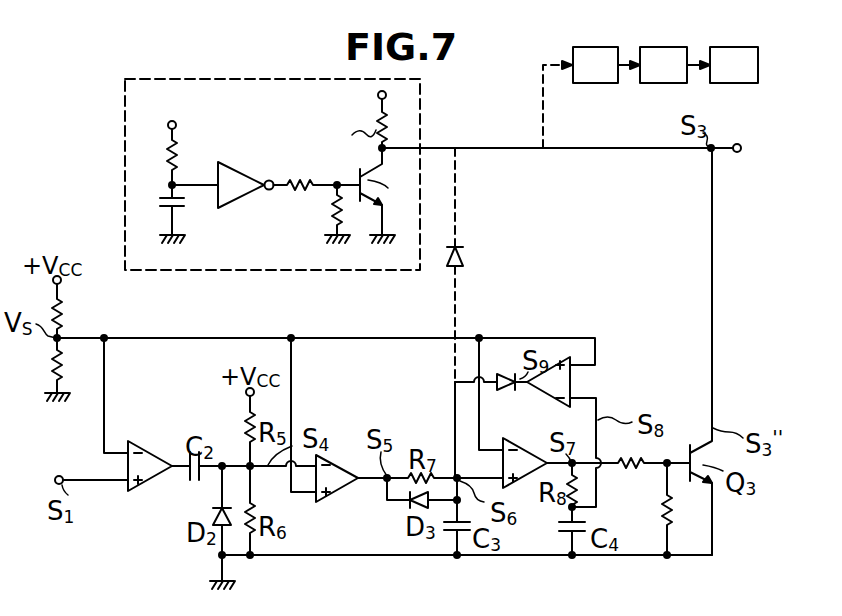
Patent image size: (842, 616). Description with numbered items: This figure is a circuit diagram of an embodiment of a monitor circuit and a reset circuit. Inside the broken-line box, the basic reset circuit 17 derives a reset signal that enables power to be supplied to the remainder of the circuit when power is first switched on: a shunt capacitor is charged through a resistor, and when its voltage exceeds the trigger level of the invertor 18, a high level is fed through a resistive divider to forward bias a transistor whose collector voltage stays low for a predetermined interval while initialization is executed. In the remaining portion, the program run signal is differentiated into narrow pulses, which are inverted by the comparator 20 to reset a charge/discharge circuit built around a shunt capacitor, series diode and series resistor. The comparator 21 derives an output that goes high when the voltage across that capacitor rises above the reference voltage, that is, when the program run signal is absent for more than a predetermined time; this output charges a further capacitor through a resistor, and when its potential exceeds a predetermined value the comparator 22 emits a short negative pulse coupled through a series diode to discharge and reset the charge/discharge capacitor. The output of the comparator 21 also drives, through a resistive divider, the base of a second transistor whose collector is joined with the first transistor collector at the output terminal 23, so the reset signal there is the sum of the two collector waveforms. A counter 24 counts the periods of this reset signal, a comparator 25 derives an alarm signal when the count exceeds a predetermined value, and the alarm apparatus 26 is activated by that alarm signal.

The basic reset circuit 17 is at (125, 148).
The invertor 18 is at (243, 203).
The comparator 20 is at (340, 497).
The comparator 21 is at (522, 478).
The comparator 22 is at (572, 383).
The output terminal 23 is at (742, 142).
The counter 24 is at (592, 47).
The comparator 25 is at (661, 47).
The alarm apparatus 26 is at (731, 47).